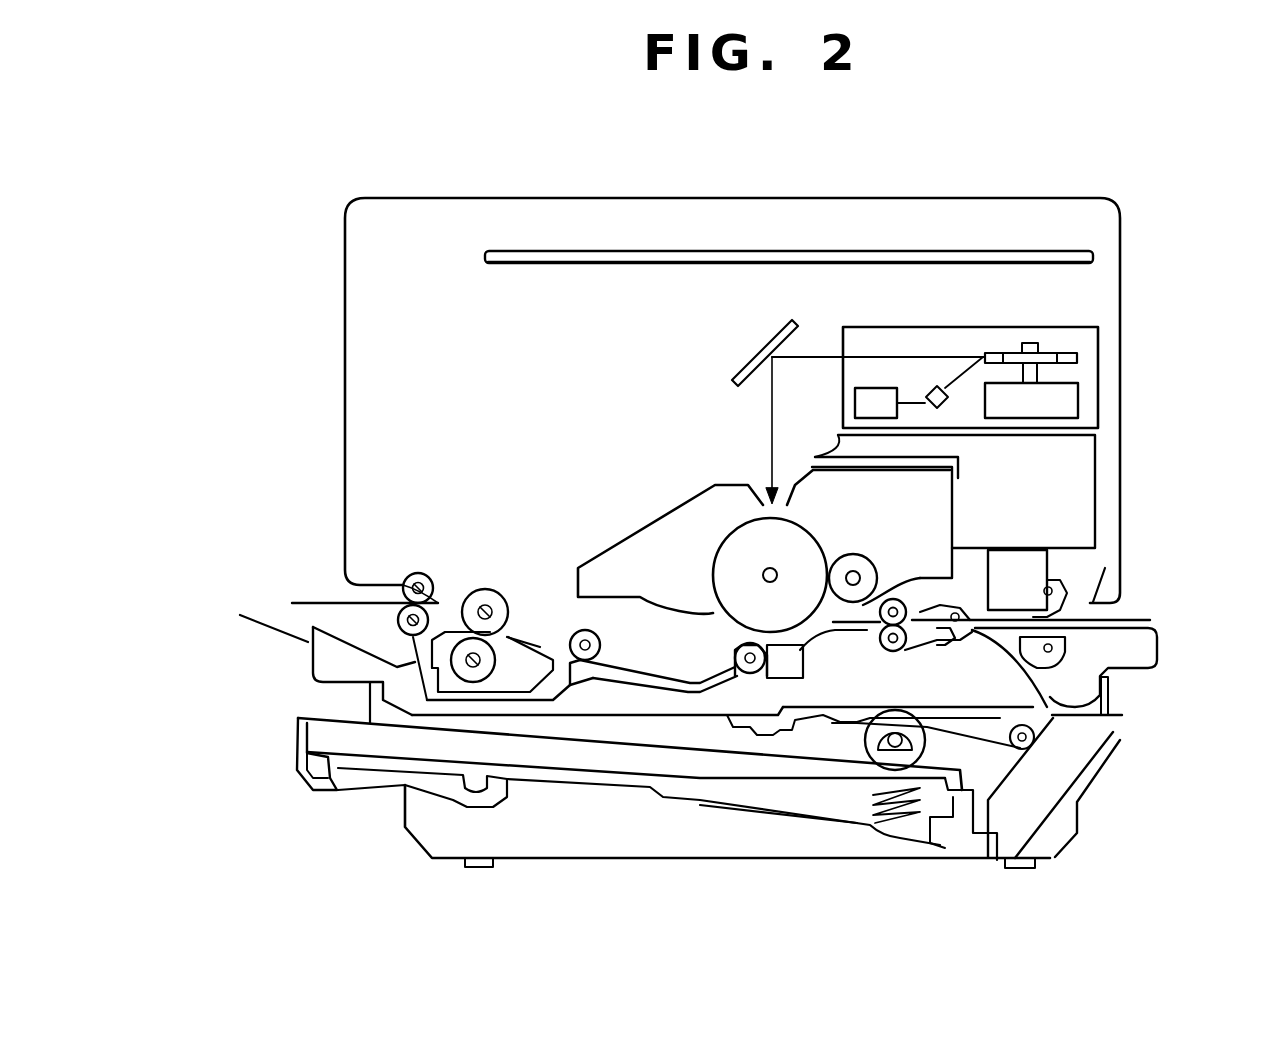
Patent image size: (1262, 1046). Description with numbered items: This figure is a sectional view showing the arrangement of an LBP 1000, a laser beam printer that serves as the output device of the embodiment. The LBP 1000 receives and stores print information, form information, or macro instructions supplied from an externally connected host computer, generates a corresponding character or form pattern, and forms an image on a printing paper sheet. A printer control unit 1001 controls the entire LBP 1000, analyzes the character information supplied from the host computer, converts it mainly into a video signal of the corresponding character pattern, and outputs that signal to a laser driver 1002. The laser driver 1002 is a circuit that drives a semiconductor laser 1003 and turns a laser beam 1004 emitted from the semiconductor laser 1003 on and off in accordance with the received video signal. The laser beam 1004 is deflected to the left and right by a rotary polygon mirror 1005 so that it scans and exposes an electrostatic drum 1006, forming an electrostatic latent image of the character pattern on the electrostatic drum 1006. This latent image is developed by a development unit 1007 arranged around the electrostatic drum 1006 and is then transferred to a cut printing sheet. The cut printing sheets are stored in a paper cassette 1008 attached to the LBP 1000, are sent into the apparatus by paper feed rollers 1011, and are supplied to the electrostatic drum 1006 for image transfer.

The LBP 1000 is at (538, 198).
The printer control unit 1001 is at (1095, 258).
The laser driver 1002 is at (855, 403).
The semiconductor laser 1003 is at (946, 404).
The laser beam 1004 is at (953, 357).
The rotary polygon mirror 1005 is at (1078, 358).
The electrostatic drum 1006 is at (720, 540).
The development unit 1007 is at (630, 558).
The paper cassette 1008 is at (297, 738).
The paper feed rollers 1011 is at (903, 652).